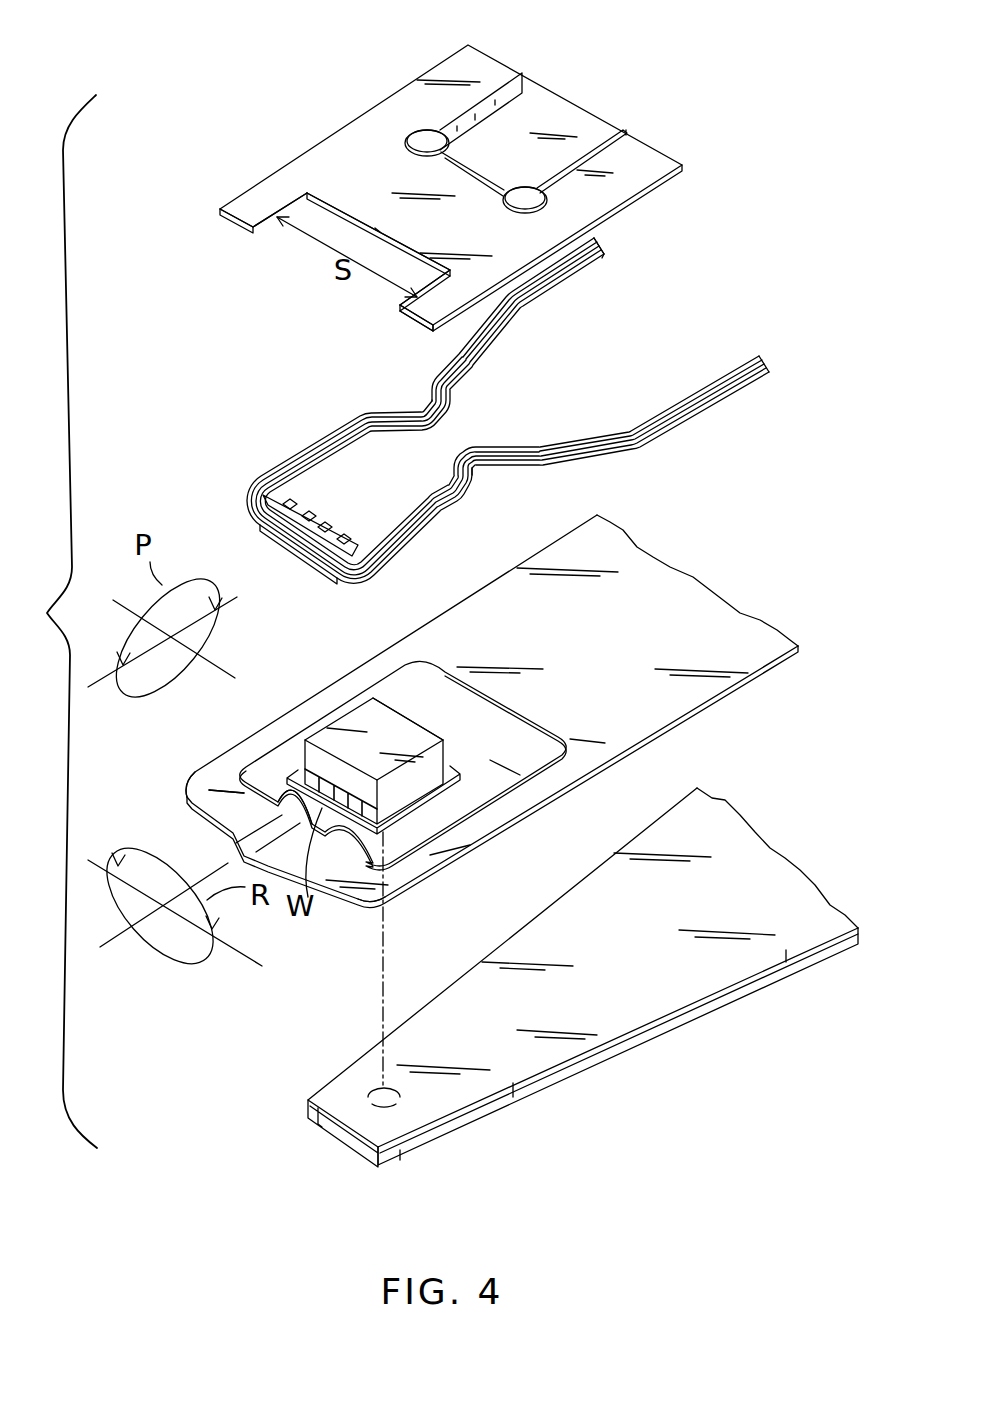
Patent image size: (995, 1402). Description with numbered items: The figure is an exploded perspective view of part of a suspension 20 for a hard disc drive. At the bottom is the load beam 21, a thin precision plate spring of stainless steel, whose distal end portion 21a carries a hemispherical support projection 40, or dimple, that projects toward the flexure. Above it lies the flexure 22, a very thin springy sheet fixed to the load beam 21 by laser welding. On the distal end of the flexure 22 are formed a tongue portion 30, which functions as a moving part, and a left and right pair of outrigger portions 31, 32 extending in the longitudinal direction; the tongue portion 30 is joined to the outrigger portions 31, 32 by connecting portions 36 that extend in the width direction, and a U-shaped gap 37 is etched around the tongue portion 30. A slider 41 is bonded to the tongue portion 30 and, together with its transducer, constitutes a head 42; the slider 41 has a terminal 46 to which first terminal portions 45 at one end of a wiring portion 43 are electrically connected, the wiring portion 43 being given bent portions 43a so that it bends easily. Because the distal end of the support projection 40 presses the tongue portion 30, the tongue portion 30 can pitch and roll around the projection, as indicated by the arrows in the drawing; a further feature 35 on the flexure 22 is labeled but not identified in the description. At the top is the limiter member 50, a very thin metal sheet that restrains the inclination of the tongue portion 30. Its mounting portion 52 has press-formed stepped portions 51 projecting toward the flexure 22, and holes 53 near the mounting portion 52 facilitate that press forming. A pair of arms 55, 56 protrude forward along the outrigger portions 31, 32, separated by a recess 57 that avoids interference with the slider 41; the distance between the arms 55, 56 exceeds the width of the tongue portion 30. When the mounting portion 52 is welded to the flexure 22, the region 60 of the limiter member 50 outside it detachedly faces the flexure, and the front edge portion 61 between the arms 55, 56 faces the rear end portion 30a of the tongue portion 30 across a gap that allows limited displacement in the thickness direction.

The suspension 20 is at (228, 392).
The load beam 21 is at (661, 998).
The distal end portion of the load beam 21a is at (411, 1109).
The flexure 22 is at (703, 688).
The tongue portion 30 is at (437, 790).
The rear end portion of the tongue portion 30a is at (453, 767).
The outrigger portion 31 is at (288, 715).
The outrigger portion 32 is at (447, 851).
The notch 35 is at (186, 806).
The connecting portions 36 is at (207, 757).
The U-shaped gap 37 is at (502, 768).
The support projection 40 is at (368, 1090).
The slider 41 is at (340, 720).
The head 42 is at (385, 700).
The wiring portion 43 is at (680, 418).
The bent portions 43a is at (417, 410).
The first terminal portions 45 is at (340, 530).
The terminal 46 is at (310, 760).
The limiter member 50 is at (655, 200).
The stepped portions 51 is at (508, 92).
The mounting portion 52 is at (557, 128).
The holes 53 is at (425, 147).
The arm 55 is at (252, 207).
The arm 56 is at (414, 305).
The recess 57 is at (345, 235).
The region 60 is at (507, 258).
The front edge portion 61 is at (373, 220).